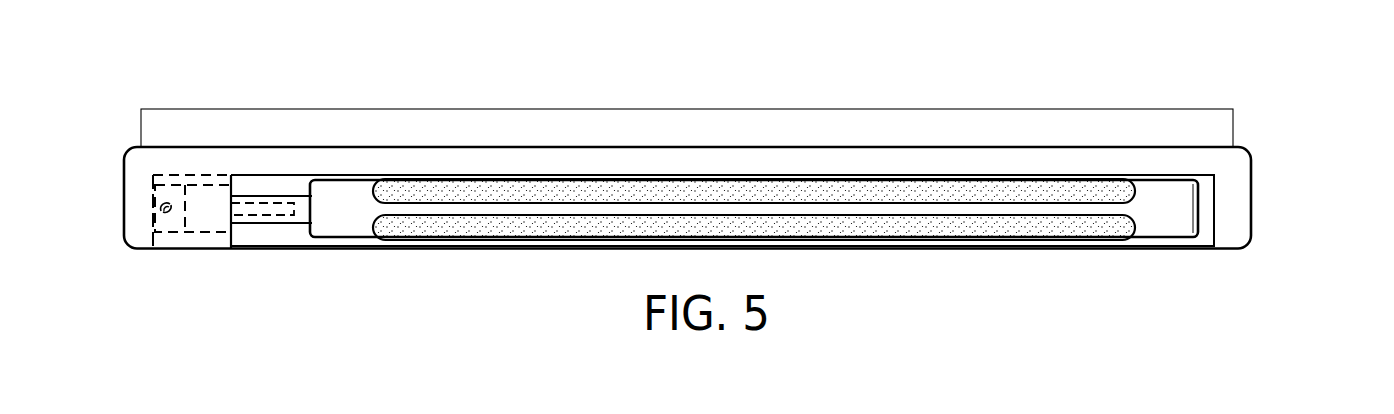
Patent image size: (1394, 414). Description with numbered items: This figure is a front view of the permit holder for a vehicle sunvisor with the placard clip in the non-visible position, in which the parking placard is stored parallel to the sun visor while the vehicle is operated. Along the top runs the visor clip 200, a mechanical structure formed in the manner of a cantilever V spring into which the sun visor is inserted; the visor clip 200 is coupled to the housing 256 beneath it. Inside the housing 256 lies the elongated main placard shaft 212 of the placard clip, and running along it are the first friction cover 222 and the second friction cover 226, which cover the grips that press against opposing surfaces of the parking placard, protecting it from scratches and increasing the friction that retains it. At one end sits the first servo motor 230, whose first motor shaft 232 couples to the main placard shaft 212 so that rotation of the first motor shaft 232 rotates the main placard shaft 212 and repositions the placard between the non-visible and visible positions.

The visor clip 200 is at (1198, 118).
The main placard shaft 212 is at (335, 205).
The first friction cover 222 is at (1067, 228).
The second friction cover 226 is at (943, 195).
The first servo motor 230 is at (207, 218).
The first motor shaft 232 is at (268, 213).
The housing 256 is at (1251, 175).